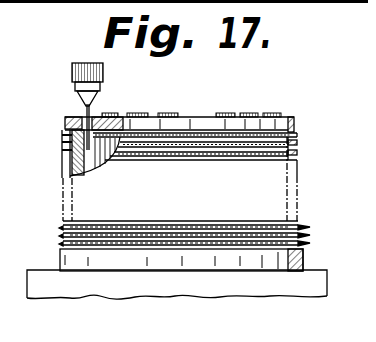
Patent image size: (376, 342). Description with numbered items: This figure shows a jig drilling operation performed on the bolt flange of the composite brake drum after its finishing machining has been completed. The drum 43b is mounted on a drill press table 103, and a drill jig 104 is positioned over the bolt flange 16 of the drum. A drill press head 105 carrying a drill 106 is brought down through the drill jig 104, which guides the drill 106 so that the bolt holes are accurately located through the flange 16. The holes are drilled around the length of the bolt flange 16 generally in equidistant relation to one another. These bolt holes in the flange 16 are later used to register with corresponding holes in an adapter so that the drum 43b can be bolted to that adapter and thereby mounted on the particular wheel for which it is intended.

The bolt flange 16 is at (72, 145).
The drum 43b is at (255, 181).
The drill press table 103 is at (245, 329).
The drill jig 104 is at (343, 105).
The drill press head 105 is at (72, 68).
The drill 106 is at (88, 105).